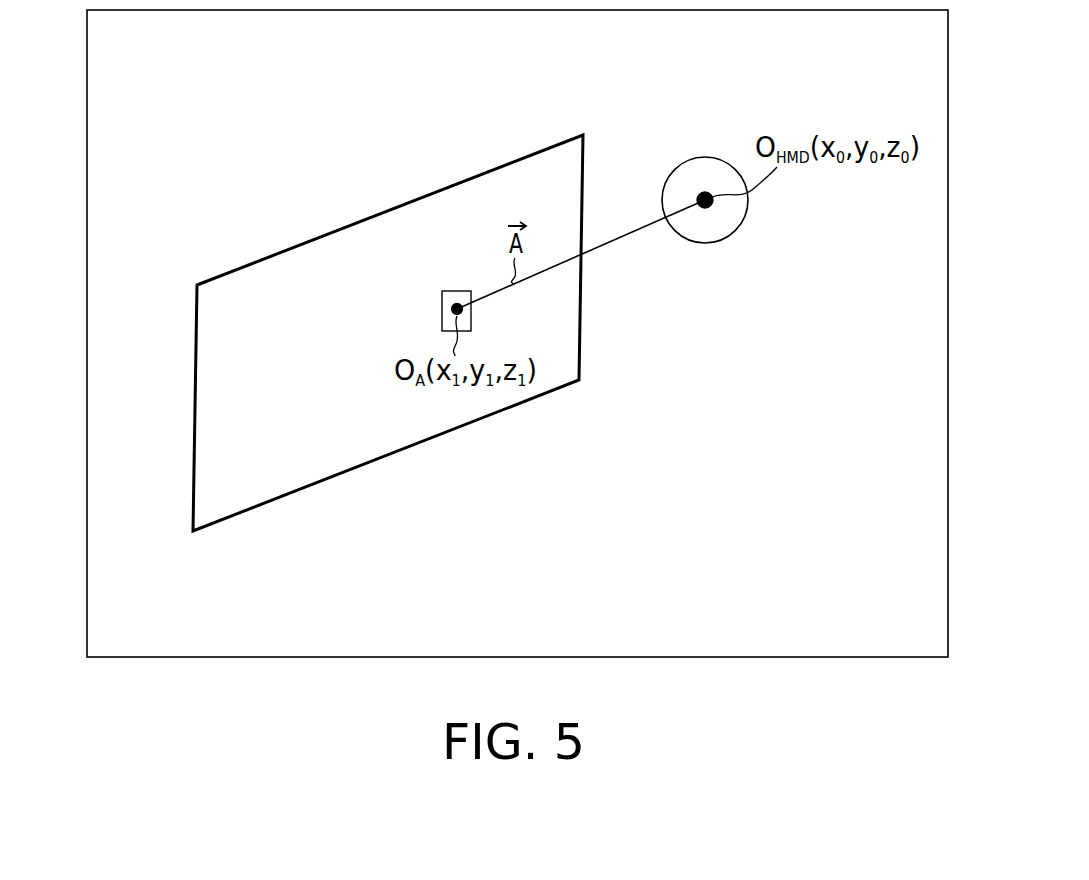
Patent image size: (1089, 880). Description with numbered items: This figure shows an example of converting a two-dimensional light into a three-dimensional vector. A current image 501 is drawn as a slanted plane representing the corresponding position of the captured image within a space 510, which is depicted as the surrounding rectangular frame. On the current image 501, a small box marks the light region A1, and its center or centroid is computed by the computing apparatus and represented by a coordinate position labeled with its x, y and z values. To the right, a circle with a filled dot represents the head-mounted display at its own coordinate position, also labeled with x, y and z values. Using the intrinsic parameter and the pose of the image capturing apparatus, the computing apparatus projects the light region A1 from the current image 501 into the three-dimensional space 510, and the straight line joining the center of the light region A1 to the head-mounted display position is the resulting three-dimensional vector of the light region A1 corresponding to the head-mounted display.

The space 510 is at (950, 62).
The current image 501 is at (374, 214).
The light region A1 is at (449, 291).